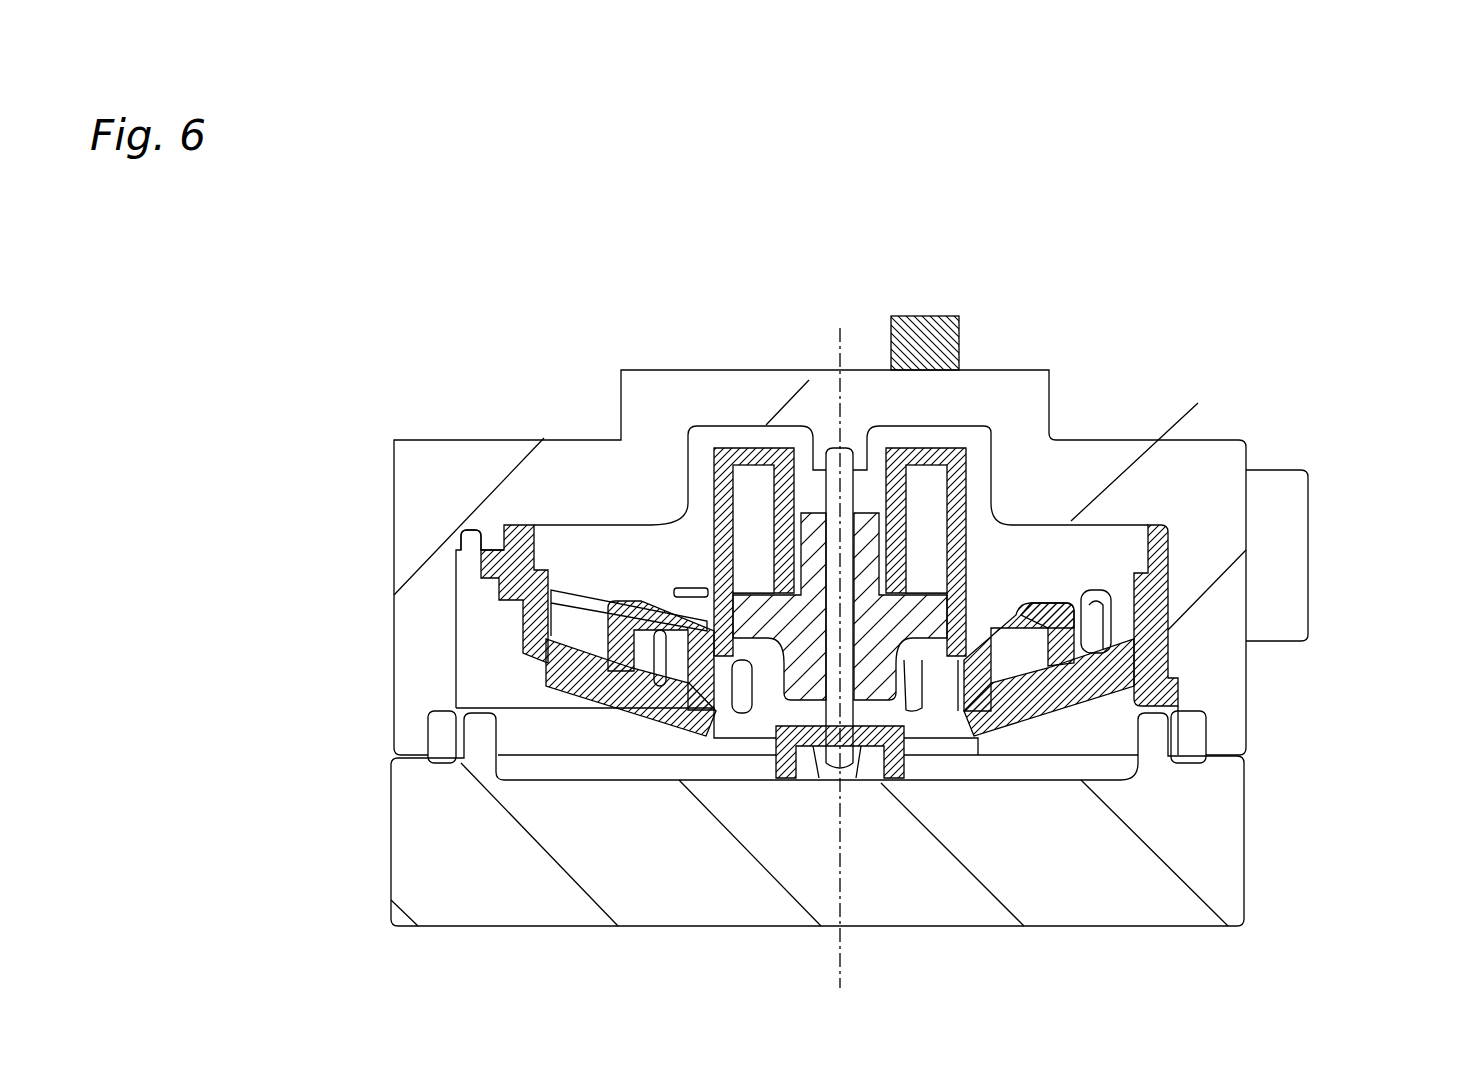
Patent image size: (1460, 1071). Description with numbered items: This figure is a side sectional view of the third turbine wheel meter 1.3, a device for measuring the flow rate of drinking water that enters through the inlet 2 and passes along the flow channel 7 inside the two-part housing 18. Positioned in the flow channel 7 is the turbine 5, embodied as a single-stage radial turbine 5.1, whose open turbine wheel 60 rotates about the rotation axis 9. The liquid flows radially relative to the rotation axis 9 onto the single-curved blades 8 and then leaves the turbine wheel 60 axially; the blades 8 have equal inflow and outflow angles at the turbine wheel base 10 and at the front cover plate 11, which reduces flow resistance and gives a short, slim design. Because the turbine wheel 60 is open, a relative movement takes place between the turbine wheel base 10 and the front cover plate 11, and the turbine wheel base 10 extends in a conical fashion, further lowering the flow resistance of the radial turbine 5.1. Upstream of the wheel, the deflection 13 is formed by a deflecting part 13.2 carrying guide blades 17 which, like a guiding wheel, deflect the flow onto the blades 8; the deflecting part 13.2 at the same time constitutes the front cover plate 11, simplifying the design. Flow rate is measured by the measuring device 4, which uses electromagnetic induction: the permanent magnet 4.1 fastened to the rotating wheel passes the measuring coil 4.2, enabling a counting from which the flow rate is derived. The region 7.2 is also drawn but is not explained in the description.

The turbine wheel meter 1.3 is at (856, 573).
The inlet 2 is at (1292, 544).
The measuring device 4 is at (804, 468).
The permanent magnet 4.1 is at (757, 492).
The measuring coil 4.2 is at (928, 313).
The turbine 5 is at (489, 643).
The radial turbine 5.1 is at (565, 636).
The flow channel 7 is at (1104, 543).
The housing recess 7.2 is at (593, 640).
The blades 8 is at (698, 668).
The rotation axis 9 is at (838, 337).
The turbine wheel base 10 is at (992, 608).
The front cover plate 11 is at (670, 714).
The deflection 13 is at (511, 511).
The deflecting part 13.2 is at (465, 548).
The guide blades 17 is at (1093, 630).
The housing 18 is at (513, 468).
The open turbine wheel 60 is at (1042, 603).